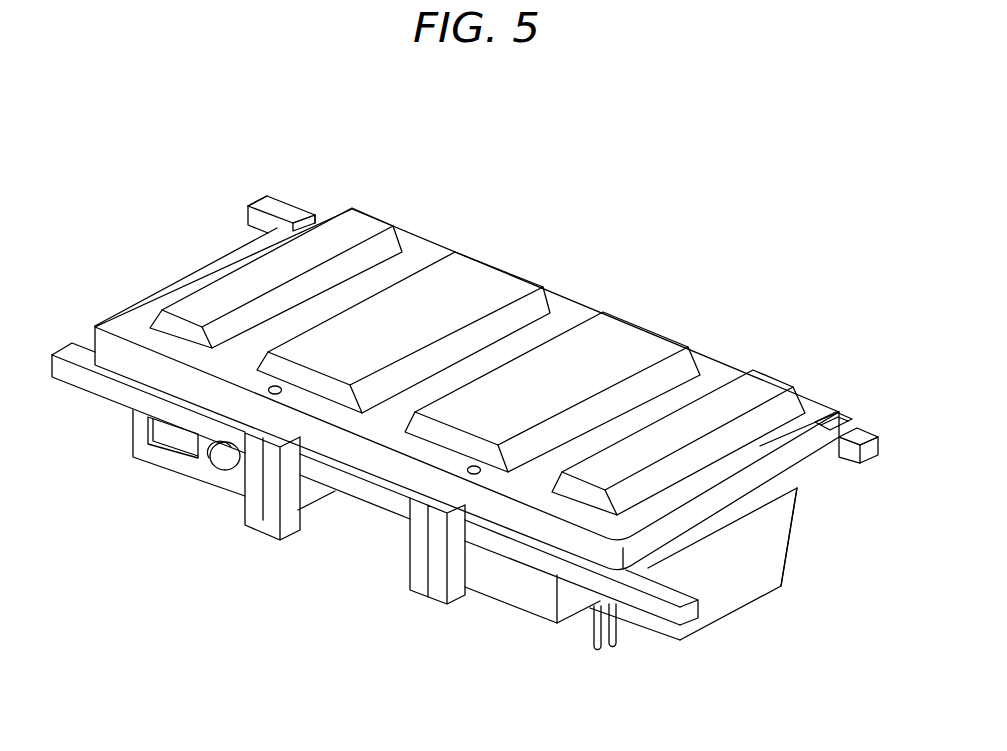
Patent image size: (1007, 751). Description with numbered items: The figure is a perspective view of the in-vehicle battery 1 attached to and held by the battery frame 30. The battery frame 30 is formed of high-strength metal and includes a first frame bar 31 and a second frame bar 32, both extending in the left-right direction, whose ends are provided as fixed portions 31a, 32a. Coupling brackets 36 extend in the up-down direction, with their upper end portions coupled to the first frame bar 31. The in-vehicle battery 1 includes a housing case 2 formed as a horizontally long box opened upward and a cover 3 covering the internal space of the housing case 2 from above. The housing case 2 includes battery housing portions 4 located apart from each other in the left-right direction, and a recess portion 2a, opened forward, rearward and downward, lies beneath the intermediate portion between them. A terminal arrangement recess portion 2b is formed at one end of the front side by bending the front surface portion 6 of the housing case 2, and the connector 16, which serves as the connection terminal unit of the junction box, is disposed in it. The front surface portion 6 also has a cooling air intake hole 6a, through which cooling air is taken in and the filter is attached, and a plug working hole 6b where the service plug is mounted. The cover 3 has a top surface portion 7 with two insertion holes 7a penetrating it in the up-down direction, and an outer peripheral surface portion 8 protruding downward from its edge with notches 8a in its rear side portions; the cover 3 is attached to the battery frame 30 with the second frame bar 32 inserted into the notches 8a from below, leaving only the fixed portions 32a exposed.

The in-vehicle battery 1 is at (414, 262).
The housing case 2 is at (777, 568).
The recess portion 2a is at (318, 502).
The terminal arrangement recess portion 2b is at (611, 652).
The cover 3 is at (566, 312).
The battery housing portion 4 is at (133, 440).
The front surface portion 6 is at (505, 593).
The cooling air intake hole 6a is at (228, 466).
The plug working hole 6b is at (153, 430).
The top surface portion 7 is at (711, 372).
The insertion hole 7a is at (268, 396).
The outer peripheral surface portion 8 is at (805, 468).
The notch 8a is at (322, 212).
The connector 16 is at (568, 612).
The battery frame 30 is at (262, 196).
The first frame bar 31 is at (88, 386).
The fixed portion 31a is at (60, 352).
The second frame bar 32 is at (871, 440).
The fixed portion 32a is at (257, 203).
The coupling bracket 36 is at (265, 543).